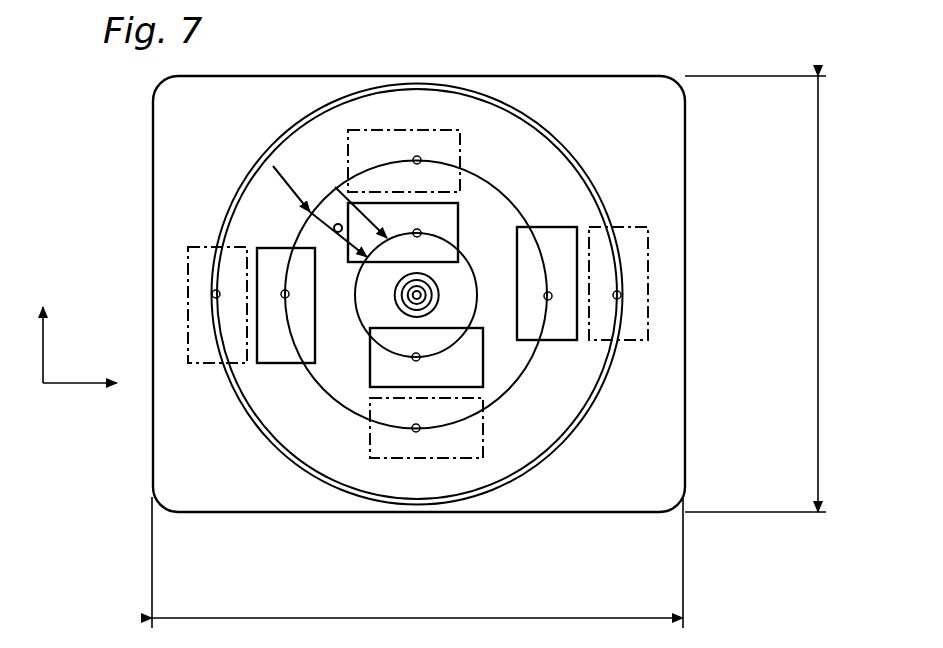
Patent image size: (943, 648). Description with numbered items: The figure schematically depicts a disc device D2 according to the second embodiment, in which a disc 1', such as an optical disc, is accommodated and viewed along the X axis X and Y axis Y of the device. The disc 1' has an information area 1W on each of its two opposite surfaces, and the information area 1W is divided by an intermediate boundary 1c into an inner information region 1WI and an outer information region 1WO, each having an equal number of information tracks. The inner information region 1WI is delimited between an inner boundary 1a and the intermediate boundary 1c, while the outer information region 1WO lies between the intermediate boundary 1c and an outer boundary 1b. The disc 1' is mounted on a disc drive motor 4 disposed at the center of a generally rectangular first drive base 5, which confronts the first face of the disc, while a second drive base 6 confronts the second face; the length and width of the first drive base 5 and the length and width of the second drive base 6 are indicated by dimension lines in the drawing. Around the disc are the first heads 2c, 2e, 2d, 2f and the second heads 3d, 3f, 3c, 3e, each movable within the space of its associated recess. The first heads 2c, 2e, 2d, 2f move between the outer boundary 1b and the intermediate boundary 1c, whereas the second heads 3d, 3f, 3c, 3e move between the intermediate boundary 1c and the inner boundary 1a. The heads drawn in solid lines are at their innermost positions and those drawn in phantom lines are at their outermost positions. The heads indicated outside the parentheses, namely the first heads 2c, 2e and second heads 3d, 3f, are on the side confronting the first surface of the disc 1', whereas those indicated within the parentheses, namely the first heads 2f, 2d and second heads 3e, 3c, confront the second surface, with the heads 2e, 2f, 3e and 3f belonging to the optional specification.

The first drive base 5 is at (684, 447).
The second drive base 6 is at (489, 352).
The disc 1' is at (418, 294).
The inner boundary 1a is at (487, 259).
The outer boundary 1b is at (562, 435).
The intermediate boundary 1c is at (520, 380).
The information area 1W is at (306, 158).
The outer information region 1WO is at (287, 193).
The inner information region 1WI is at (333, 228).
The disc drive motor 4 is at (438, 297).
The first head 2c is at (560, 227).
The first head 2f is at (633, 227).
The first head 2e is at (272, 365).
The first head 2d is at (202, 363).
The second head 3d is at (460, 220).
The second head 3e is at (460, 148).
The second head 3f is at (372, 370).
The second head 3c is at (318, 527).
The disc device D2 is at (152, 199).
The X axis X is at (88, 365).
The Y axis Y is at (44, 326).